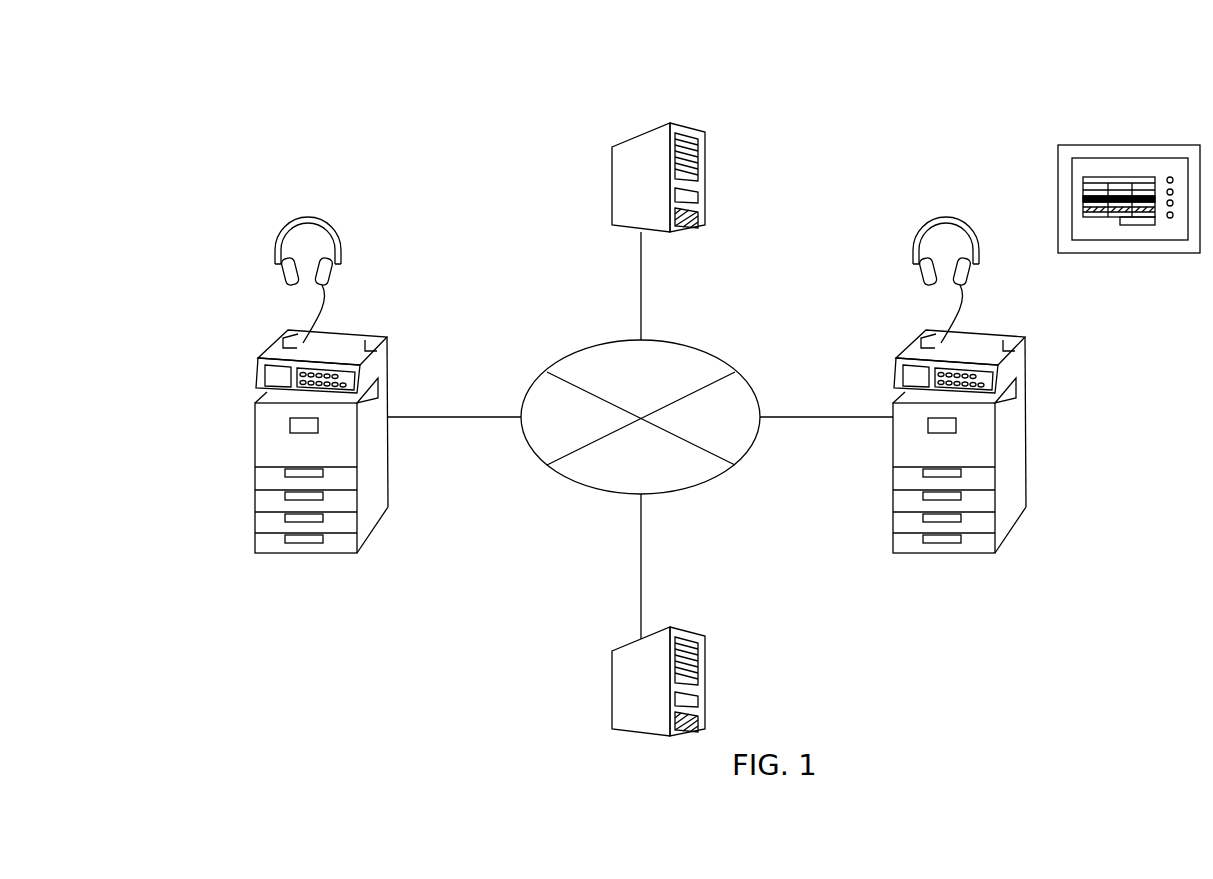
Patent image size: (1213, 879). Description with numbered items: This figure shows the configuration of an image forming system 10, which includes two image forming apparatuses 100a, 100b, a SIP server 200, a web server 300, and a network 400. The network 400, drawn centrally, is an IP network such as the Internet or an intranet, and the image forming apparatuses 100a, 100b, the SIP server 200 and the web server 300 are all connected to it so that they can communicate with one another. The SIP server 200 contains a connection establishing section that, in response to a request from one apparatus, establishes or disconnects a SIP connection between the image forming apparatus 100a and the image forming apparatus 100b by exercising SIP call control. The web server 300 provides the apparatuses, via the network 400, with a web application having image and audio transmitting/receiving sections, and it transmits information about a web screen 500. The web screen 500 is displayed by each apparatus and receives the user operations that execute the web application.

The image forming system 10 is at (491, 101).
The image forming apparatus 100a is at (355, 332).
The image forming apparatus 100b is at (993, 333).
The SIP server 200 is at (692, 122).
The web server 300 is at (690, 628).
The network 400 is at (697, 348).
The web screen 500 is at (1135, 144).